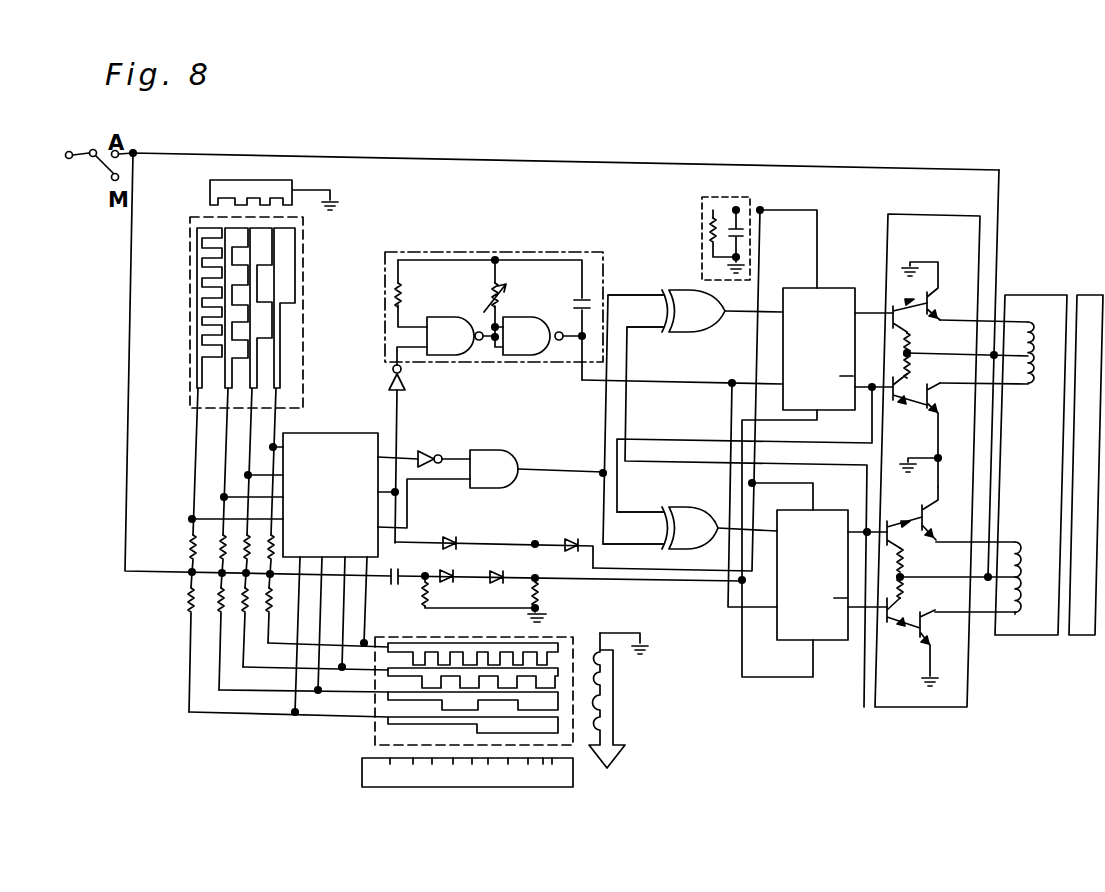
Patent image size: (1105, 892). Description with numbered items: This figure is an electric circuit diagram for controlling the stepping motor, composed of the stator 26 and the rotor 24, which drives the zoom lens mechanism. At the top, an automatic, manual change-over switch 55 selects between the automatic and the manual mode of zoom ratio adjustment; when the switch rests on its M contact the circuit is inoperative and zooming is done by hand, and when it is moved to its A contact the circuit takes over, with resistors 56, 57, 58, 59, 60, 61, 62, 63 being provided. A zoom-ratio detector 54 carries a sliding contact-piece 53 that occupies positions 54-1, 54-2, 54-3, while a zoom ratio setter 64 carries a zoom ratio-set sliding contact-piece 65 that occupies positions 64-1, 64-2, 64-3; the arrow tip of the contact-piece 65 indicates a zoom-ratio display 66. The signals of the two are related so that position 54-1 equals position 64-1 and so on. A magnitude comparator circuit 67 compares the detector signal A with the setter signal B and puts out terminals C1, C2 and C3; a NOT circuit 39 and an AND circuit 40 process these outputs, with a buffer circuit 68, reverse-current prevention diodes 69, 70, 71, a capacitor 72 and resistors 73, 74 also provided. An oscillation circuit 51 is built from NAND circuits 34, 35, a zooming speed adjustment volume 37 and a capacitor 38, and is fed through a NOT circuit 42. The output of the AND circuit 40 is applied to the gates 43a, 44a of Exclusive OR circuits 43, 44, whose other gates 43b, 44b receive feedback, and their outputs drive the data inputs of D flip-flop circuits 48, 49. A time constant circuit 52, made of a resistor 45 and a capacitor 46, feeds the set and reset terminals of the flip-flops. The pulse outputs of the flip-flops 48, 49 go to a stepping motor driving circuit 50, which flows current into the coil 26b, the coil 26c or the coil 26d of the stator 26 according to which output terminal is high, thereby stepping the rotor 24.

The rotor 24 is at (1082, 636).
The stator 26 is at (1025, 295).
The coil 26b is at (1030, 386).
The coil 26c is at (1017, 542).
The coil 26d is at (1015, 616).
The NAND circuit 34 is at (441, 317).
The NAND circuit 35 is at (535, 317).
The zooming speed adjustment volume 37 is at (503, 292).
The capacitor 38 is at (592, 298).
The NOT circuit 39 is at (430, 451).
The AND circuit 40 is at (500, 450).
The NOT circuit 42 is at (405, 381).
The Exclusive OR circuit 43 is at (683, 291).
The gate of EX-OR circuit 43 43a is at (635, 308).
The other gate of EX-OR circuit 43 43b is at (650, 342).
The Exclusive OR circuit 44 is at (703, 512).
The gate of EX-OR circuit 44 44a is at (633, 538).
The other gate of EX-OR circuit 44 44b is at (642, 498).
The resistor 45 is at (712, 235).
The capacitor 46 is at (740, 232).
The D flip-flop circuit 48 is at (825, 288).
The D flip-flop circuit 49 is at (830, 640).
The stepping motor driving circuit 50 is at (935, 214).
The oscillation circuit 51 is at (470, 250).
The time constant circuit 52 is at (742, 197).
The sliding contact-piece 53 is at (290, 182).
The zoom-ratio detector 54 is at (305, 280).
The position of zoom-ratio detector 54-1 is at (180, 236).
The position of zoom-ratio detector 54-2 is at (180, 311).
The position of zoom-ratio detector 54-3 is at (180, 377).
The automatic, manual change-over switch 55 is at (93, 170).
The resistor 56 is at (190, 546).
The resistor 57 is at (220, 548).
The resistor 58 is at (245, 545).
The resistor 59 is at (268, 542).
The resistor 60 is at (189, 600).
The resistor 61 is at (220, 600).
The resistor 62 is at (245, 606).
The resistor 63 is at (269, 606).
The zoom ratio setter 64 is at (372, 725).
The position of zoom-ratio setter 64-1 is at (555, 634).
The position of zoom-ratio setter 64-2 is at (475, 634).
The position of zoom-ratio setter 64-3 is at (408, 634).
The zoom ratio-set sliding contact-piece 65 is at (613, 705).
The zoom-ratio display 66 is at (362, 780).
The magnitude comparator circuit 67 is at (338, 433).
The buffer circuit 68 is at (452, 568).
The reverse-current prevention diode 69 is at (450, 537).
The reverse-current prevention diode 70 is at (502, 569).
The reverse-current prevention diode 71 is at (573, 539).
The capacitor 72 is at (391, 580).
The resistor 73 is at (425, 586).
The resistor 74 is at (545, 590).